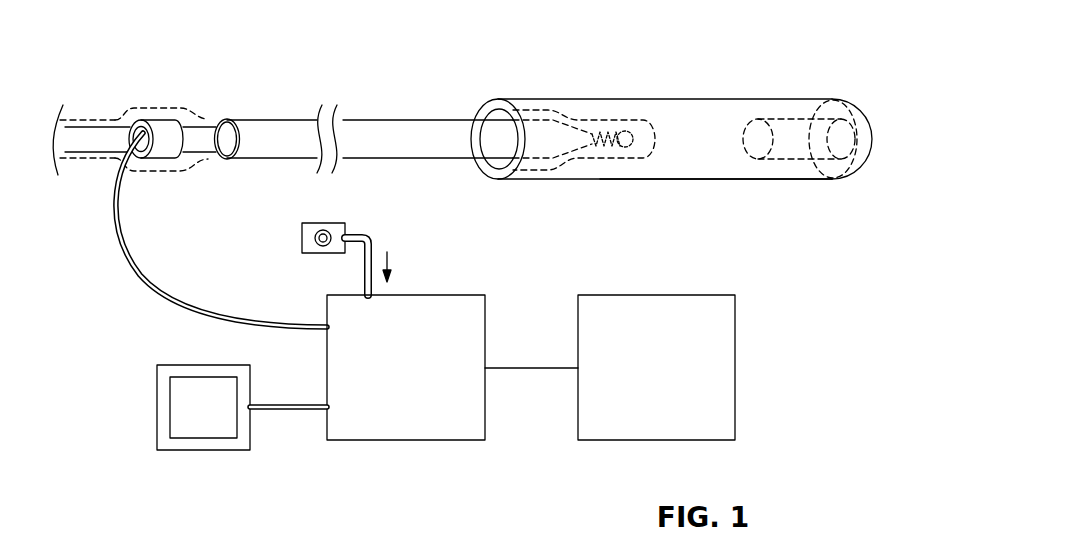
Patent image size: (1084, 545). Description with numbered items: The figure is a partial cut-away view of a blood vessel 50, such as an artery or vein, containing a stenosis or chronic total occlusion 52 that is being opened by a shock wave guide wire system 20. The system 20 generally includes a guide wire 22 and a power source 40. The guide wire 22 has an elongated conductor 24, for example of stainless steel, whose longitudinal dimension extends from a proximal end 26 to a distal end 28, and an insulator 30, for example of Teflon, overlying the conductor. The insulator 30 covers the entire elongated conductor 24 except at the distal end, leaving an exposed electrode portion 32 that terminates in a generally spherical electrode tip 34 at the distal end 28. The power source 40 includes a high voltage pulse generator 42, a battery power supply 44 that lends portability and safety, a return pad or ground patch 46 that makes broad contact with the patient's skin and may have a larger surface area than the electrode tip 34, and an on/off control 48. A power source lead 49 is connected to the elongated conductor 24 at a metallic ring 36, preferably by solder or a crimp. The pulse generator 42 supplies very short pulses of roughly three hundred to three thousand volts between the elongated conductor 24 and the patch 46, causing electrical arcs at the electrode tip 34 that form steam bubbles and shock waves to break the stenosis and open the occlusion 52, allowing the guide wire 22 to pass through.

The shock wave guide wire system 20 is at (287, 70).
The guide wire 22 is at (352, 118).
The elongated conductor 24 is at (197, 137).
The proximal end 26 is at (93, 118).
The distal end 28 is at (652, 139).
The insulator 30 is at (163, 108).
The exposed electrode portion 32 is at (605, 132).
The electrode tip 34 is at (623, 130).
The metallic ring 36 is at (160, 132).
The power source 40 is at (462, 242).
The high voltage pulse generator 42 is at (436, 295).
The battery power supply 44 is at (686, 295).
The return pad or ground patch 46 is at (157, 413).
The on/off control 48 is at (340, 233).
The power source lead 49 is at (142, 268).
The blood vessel 50 is at (723, 98).
The stenosis or chronic total occlusion 52 is at (702, 163).